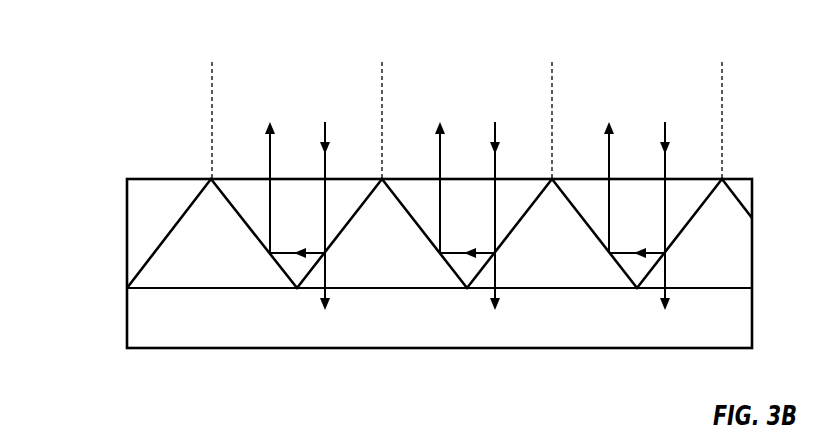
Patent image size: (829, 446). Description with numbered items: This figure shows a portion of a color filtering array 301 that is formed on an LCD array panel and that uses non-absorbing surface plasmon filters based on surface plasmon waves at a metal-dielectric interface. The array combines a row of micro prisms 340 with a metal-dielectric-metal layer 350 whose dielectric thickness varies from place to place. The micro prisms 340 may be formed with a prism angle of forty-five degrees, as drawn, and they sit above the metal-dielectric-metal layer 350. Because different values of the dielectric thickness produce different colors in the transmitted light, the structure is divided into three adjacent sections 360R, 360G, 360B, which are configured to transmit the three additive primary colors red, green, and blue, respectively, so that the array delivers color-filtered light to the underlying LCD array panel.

The color filtering array 301 is at (126, 49).
The micro prism 340 is at (232, 229).
The metal-dielectric-metal layer 350 is at (404, 327).
The red section 360R is at (382, 87).
The green section 360G is at (552, 87).
The blue section 360B is at (722, 87).